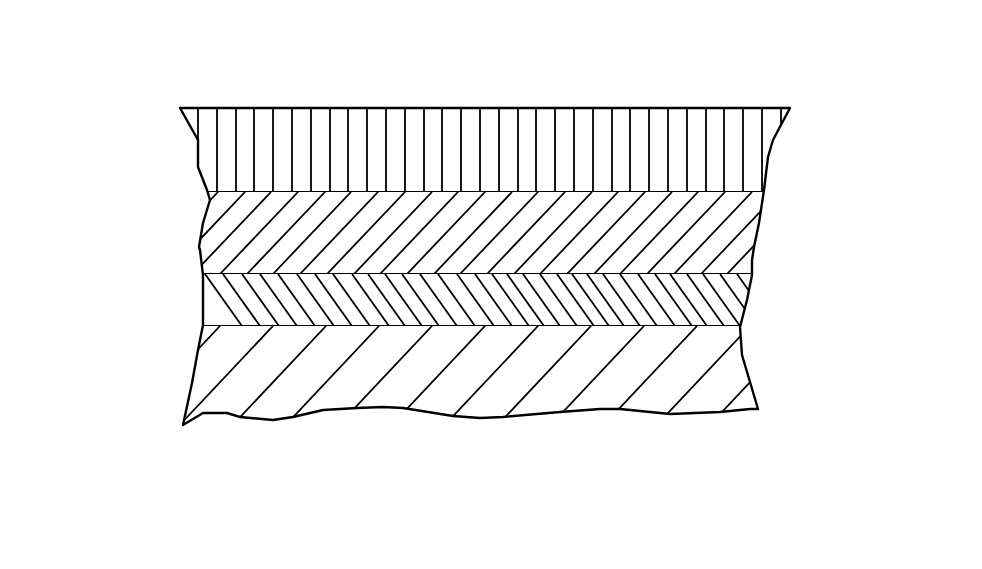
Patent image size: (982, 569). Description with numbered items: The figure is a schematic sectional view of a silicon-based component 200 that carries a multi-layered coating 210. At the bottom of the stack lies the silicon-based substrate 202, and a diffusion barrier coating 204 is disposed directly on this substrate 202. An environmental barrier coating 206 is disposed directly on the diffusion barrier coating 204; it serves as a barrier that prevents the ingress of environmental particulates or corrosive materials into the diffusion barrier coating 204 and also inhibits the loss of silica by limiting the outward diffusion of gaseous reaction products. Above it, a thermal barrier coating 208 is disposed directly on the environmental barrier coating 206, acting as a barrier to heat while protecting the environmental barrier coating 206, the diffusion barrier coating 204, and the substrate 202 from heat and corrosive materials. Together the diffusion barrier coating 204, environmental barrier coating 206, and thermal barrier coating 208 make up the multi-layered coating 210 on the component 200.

The silicon-based component 200 is at (737, 85).
The silicon-based substrate 202 is at (730, 365).
The diffusion barrier coating 204 is at (730, 302).
The environmental barrier coating 206 is at (748, 207).
The thermal barrier coating 208 is at (750, 138).
The multi-layered coating 210 is at (165, 107).